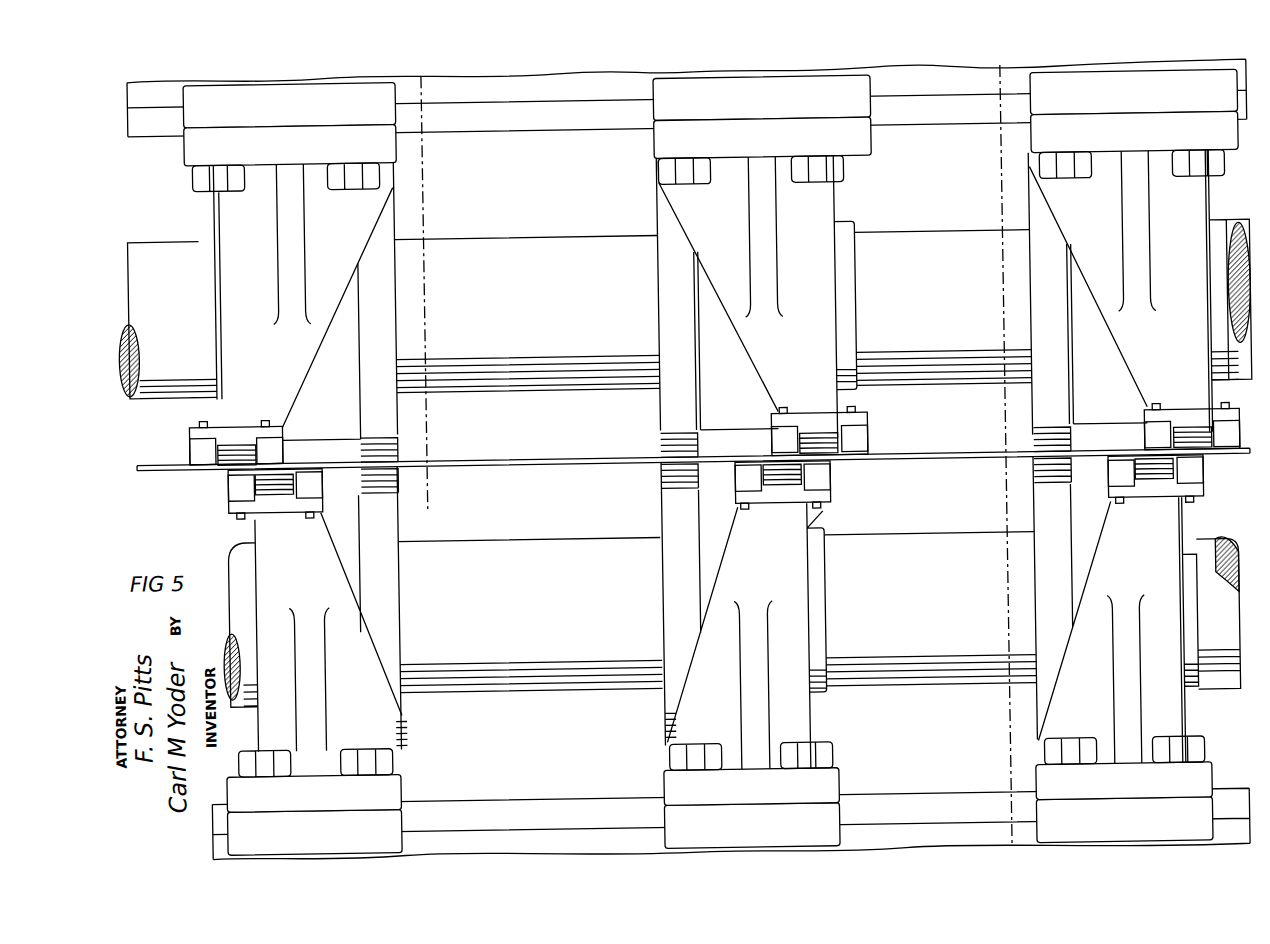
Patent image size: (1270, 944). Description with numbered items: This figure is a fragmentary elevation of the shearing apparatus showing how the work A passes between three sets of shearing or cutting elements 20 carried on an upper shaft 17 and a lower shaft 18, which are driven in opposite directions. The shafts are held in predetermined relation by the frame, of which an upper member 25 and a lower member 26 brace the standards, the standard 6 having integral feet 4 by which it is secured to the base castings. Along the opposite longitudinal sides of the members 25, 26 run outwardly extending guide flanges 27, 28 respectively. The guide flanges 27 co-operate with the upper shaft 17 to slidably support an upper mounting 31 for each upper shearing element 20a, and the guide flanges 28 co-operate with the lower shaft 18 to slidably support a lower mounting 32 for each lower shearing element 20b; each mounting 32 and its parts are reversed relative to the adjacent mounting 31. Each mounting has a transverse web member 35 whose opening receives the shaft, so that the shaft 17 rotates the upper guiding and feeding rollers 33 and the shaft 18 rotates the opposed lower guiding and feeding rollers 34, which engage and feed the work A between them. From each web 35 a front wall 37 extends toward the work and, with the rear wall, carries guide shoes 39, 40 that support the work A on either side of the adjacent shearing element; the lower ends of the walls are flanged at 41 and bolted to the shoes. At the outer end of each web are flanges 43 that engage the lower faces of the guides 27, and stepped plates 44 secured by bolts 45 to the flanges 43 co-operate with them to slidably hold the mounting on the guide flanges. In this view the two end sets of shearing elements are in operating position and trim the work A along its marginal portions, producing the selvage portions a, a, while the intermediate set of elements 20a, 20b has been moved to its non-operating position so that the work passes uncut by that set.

The upper shaft 17 is at (190, 255).
The lower shaft 18 is at (232, 580).
The set of shearing or cutting elements 20 is at (693, 447).
The upper shearing element 20a is at (235, 447).
The lower shearing element 20b is at (270, 485).
The upper member 25 is at (880, 105).
The lower member 26 is at (890, 840).
The guide flanges 27 is at (582, 112).
The guide flanges 28 is at (515, 800).
The mounting 31 is at (721, 299).
The mounting 32 is at (727, 629).
The upper guiding and feeding roller 33 is at (398, 218).
The lower guiding and feeding roller 34 is at (383, 602).
The web member 35 is at (395, 410).
The front wall 37 is at (288, 378).
The guide shoe 39 is at (203, 445).
The guide shoe 40 is at (272, 440).
The flange 41 is at (200, 425).
The flanges 43 is at (395, 138).
The stepped plates 44 is at (220, 105).
The bolts 45 is at (210, 170).
The selvage portion a is at (150, 462).
The work A is at (620, 462).
The feet 4 is at (1014, 79).
The standard 6 is at (414, 84).